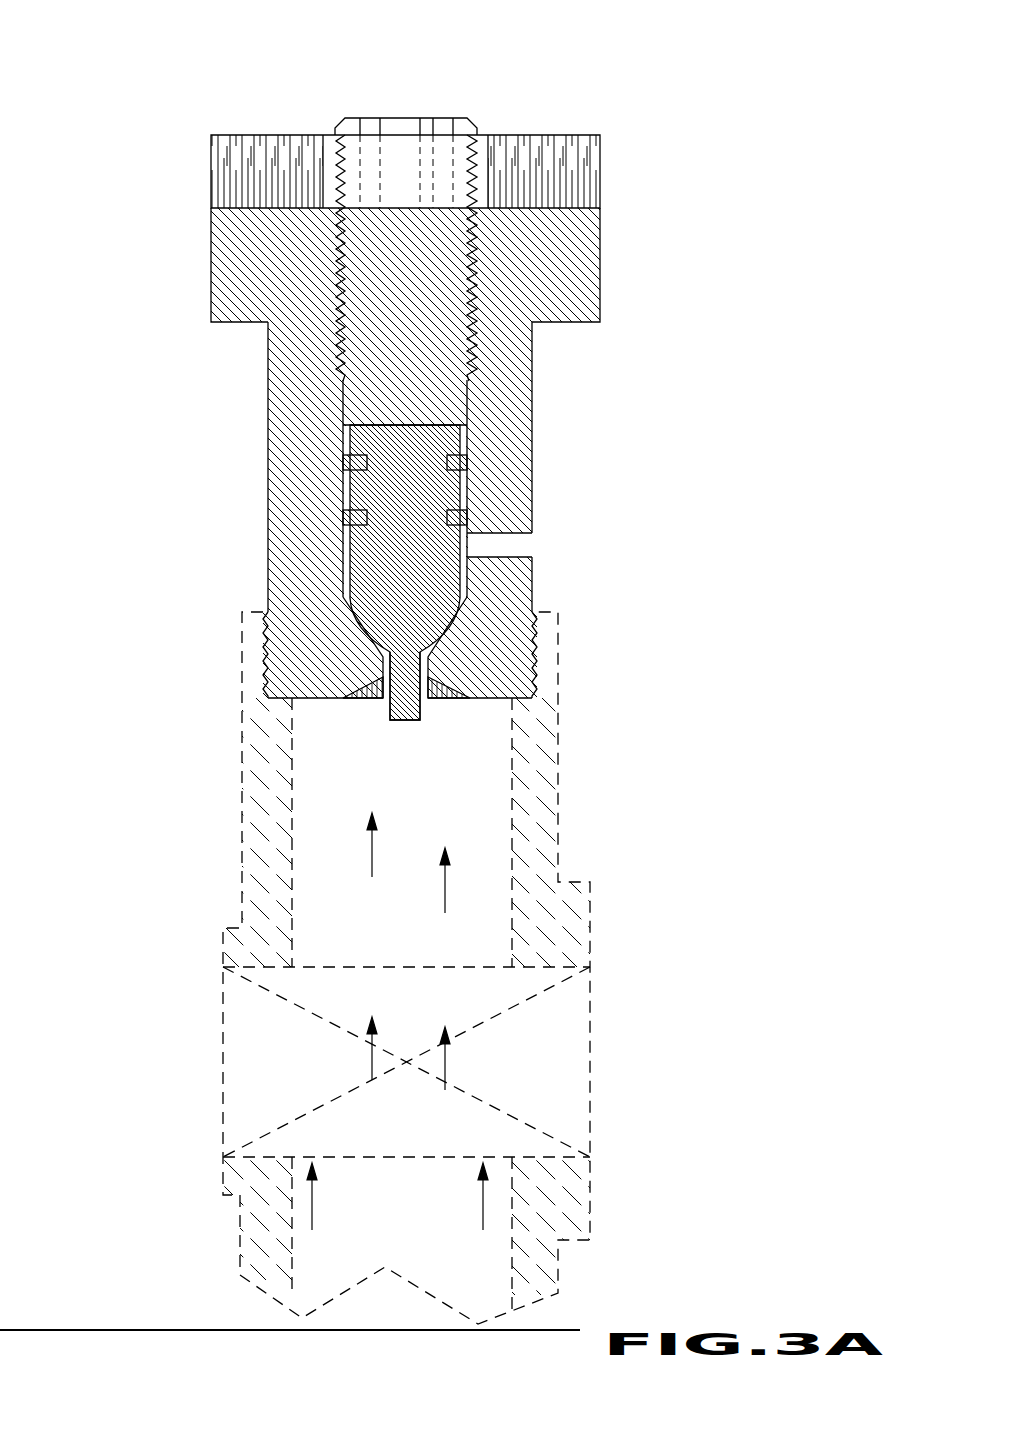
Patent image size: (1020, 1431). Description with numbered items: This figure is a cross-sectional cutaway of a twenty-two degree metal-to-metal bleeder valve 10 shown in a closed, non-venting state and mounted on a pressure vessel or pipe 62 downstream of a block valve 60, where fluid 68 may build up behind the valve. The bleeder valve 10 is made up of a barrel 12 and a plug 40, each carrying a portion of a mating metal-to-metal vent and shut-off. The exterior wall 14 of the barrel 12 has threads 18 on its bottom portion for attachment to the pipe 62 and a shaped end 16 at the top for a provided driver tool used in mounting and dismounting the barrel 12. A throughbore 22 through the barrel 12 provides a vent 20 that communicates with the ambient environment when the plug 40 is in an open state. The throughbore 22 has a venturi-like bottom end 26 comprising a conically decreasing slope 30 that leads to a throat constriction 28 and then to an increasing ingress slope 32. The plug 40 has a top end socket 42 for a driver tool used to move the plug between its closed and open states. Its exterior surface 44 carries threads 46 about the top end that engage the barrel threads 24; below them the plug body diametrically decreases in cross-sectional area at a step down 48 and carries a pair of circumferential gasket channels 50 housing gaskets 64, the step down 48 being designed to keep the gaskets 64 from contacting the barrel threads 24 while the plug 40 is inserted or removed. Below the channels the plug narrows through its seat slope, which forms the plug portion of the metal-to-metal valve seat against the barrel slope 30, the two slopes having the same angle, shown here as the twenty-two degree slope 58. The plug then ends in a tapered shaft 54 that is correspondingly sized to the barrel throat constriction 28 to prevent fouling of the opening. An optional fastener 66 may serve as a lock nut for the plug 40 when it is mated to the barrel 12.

The bleeder valve 10 is at (646, 170).
The barrel 12 is at (172, 208).
The exterior wall 14 is at (394, 526).
The shaped end 16 is at (341, 389).
The threads 18 is at (394, 671).
The vent 20 is at (525, 540).
The throughbore 22 is at (453, 598).
The barrel threads 24 is at (470, 256).
The venturi-like bottom end 26 is at (438, 712).
The throat constriction 28 is at (498, 666).
The conically decreasing slope 30 is at (268, 640).
The increasing ingress slope 32 is at (415, 968).
The plug 40 is at (504, 298).
The top end socket 42 is at (407, 125).
The exterior surface 44 is at (348, 555).
The threads 46 is at (470, 268).
The step down 48 is at (347, 428).
The circumferential gasket channels 50 is at (505, 488).
The tapered shaft 54 is at (392, 702).
The slope 58 is at (432, 640).
The block valve 60 is at (430, 1147).
The pipe 62 is at (241, 1210).
The gaskets 64 is at (467, 457).
The fastener 66 is at (538, 135).
The fluid 68 is at (372, 870).